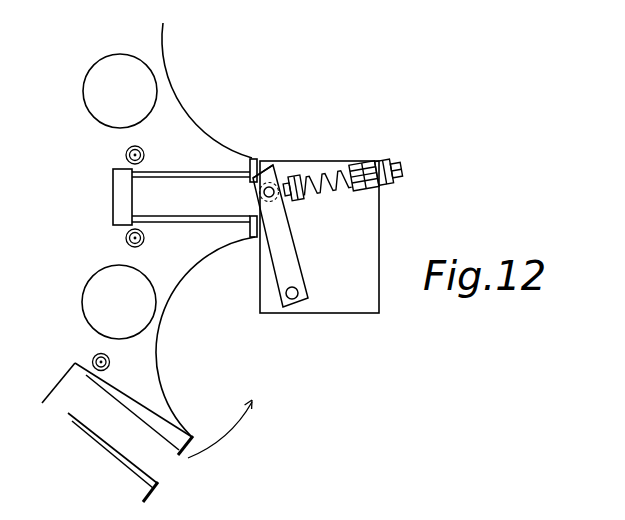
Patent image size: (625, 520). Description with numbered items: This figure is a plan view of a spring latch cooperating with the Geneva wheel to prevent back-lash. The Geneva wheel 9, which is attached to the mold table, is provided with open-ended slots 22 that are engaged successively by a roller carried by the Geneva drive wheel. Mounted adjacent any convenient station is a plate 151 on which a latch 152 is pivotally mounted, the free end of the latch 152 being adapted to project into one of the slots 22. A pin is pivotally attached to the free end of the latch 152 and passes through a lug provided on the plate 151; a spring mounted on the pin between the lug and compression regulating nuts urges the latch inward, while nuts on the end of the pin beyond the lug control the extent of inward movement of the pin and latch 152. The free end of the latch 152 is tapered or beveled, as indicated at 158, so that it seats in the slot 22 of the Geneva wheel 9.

The Geneva wheel 9 is at (168, 240).
The slots 22 is at (147, 183).
The plate 151 is at (363, 223).
The latch 152 is at (283, 250).
The tapered or beveled free end 158 is at (265, 170).